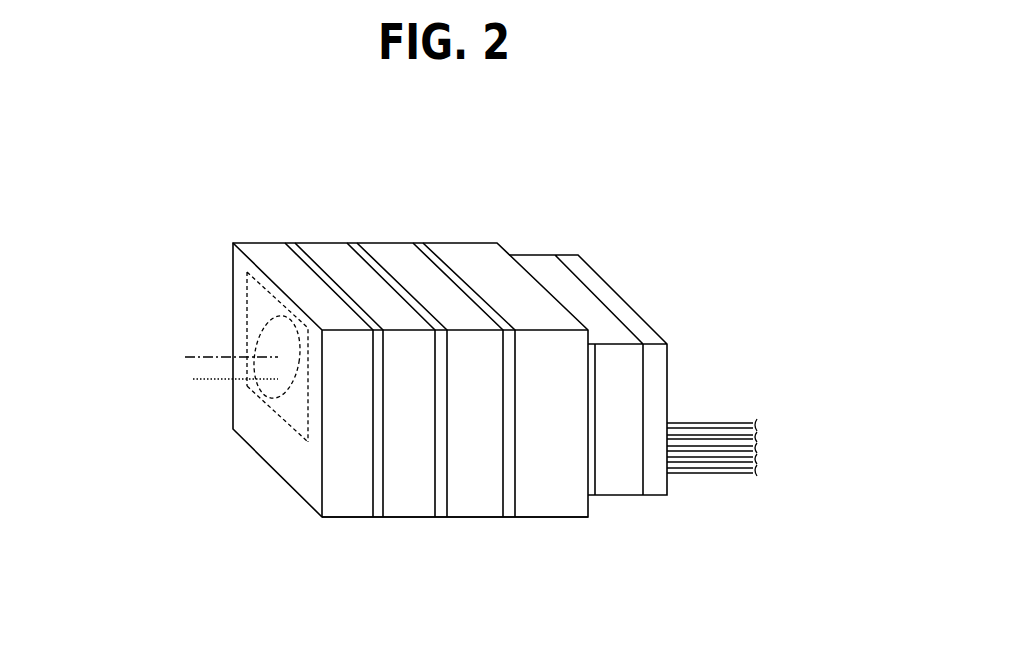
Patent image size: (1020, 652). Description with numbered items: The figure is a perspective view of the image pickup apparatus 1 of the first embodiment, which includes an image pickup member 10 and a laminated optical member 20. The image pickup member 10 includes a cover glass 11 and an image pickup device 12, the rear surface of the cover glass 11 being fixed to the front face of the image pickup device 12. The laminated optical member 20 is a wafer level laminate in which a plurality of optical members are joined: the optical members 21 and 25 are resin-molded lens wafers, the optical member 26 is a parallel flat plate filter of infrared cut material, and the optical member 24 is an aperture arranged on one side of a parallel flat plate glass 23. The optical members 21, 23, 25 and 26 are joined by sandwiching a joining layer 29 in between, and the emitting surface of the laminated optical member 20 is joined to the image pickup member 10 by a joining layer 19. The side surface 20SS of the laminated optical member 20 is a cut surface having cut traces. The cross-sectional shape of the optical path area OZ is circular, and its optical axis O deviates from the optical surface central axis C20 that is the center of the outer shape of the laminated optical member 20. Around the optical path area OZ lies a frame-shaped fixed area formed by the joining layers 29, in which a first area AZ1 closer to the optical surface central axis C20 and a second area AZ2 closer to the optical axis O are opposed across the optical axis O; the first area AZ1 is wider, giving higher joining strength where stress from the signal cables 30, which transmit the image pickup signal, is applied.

The image pickup apparatus 1 is at (727, 196).
The image pickup member 10 is at (618, 267).
The cover glass 11 is at (617, 343).
The image pickup device 12 is at (656, 343).
The joining layer 19 is at (593, 342).
The laminated optical member 20 is at (502, 166).
The optical member 21 is at (255, 243).
The parallel flat plate glass 23 is at (319, 243).
The optical member 24 is at (384, 243).
The optical member 25 is at (447, 243).
The optical member 26 is at (484, 243).
The joining layer 29 is at (419, 243).
The signal cables 30 is at (720, 422).
The side surface 20SS is at (429, 524).
The first area AZ1 is at (260, 440).
The second area AZ2 is at (268, 289).
The optical path area OZ is at (260, 341).
The optical axis O is at (220, 357).
The optical surface central axis C20 is at (209, 383).